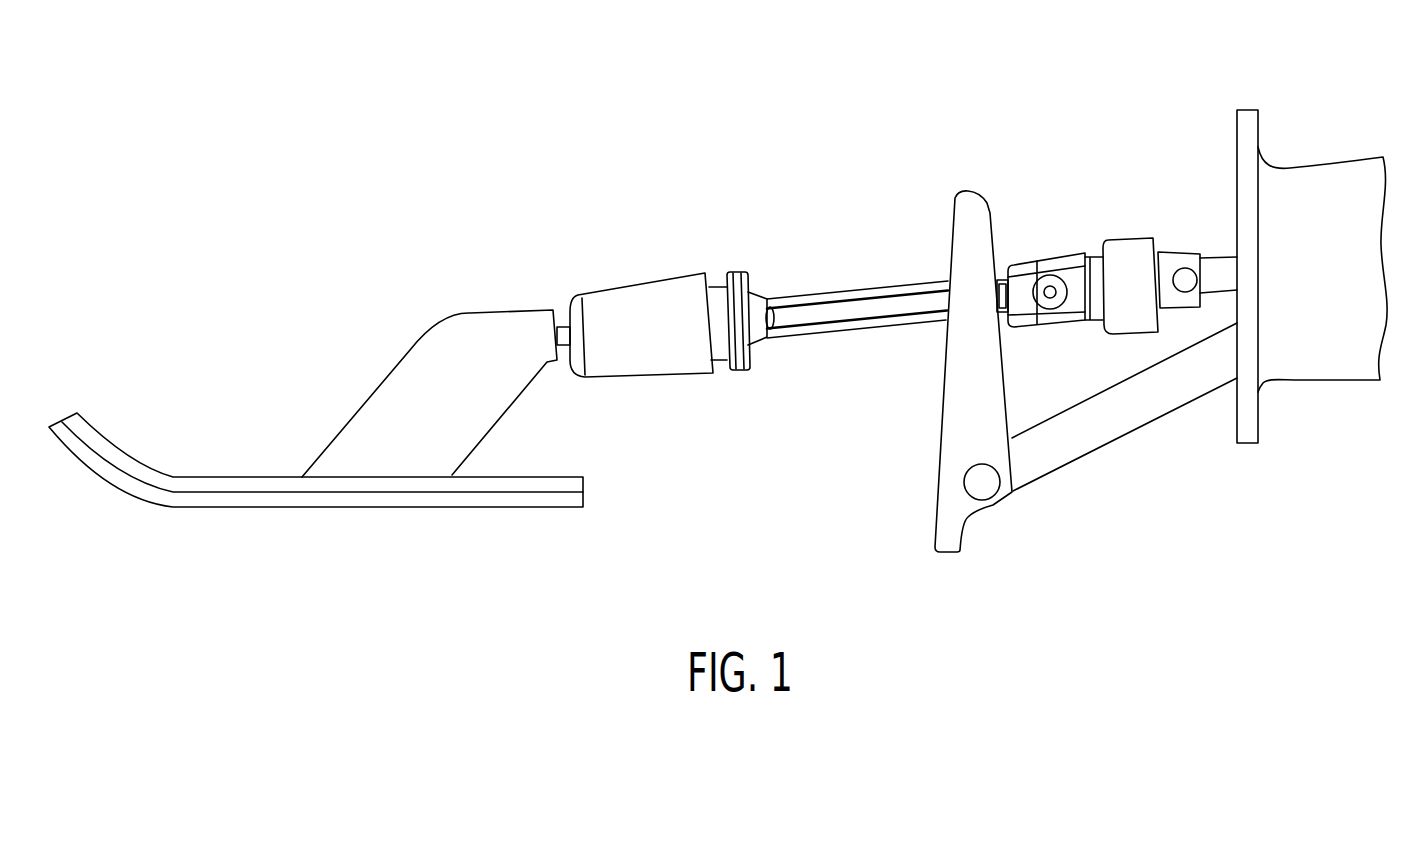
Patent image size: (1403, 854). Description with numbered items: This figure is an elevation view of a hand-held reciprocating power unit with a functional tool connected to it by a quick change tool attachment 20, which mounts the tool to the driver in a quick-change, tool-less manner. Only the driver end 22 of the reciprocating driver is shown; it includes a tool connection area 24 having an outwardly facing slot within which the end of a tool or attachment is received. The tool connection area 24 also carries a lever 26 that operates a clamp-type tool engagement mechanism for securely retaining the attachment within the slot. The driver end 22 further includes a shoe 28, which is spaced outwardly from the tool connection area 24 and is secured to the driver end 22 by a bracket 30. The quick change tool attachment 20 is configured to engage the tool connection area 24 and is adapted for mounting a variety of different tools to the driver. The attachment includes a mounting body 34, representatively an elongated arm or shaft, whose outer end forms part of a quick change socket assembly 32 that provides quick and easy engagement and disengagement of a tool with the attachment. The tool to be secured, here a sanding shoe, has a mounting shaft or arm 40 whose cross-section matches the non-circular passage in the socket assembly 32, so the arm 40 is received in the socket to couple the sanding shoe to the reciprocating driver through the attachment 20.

The quick change tool attachment 20 is at (498, 346).
The driver end 22 is at (1277, 115).
The tool connection area 24 is at (1173, 230).
The lever 26 is at (1137, 237).
The shoe 28 is at (947, 530).
The bracket 30 is at (1090, 442).
The quick change socket assembly 32 is at (627, 265).
The mounting body 34 is at (853, 337).
The mounting shaft or arm 40 is at (562, 323).